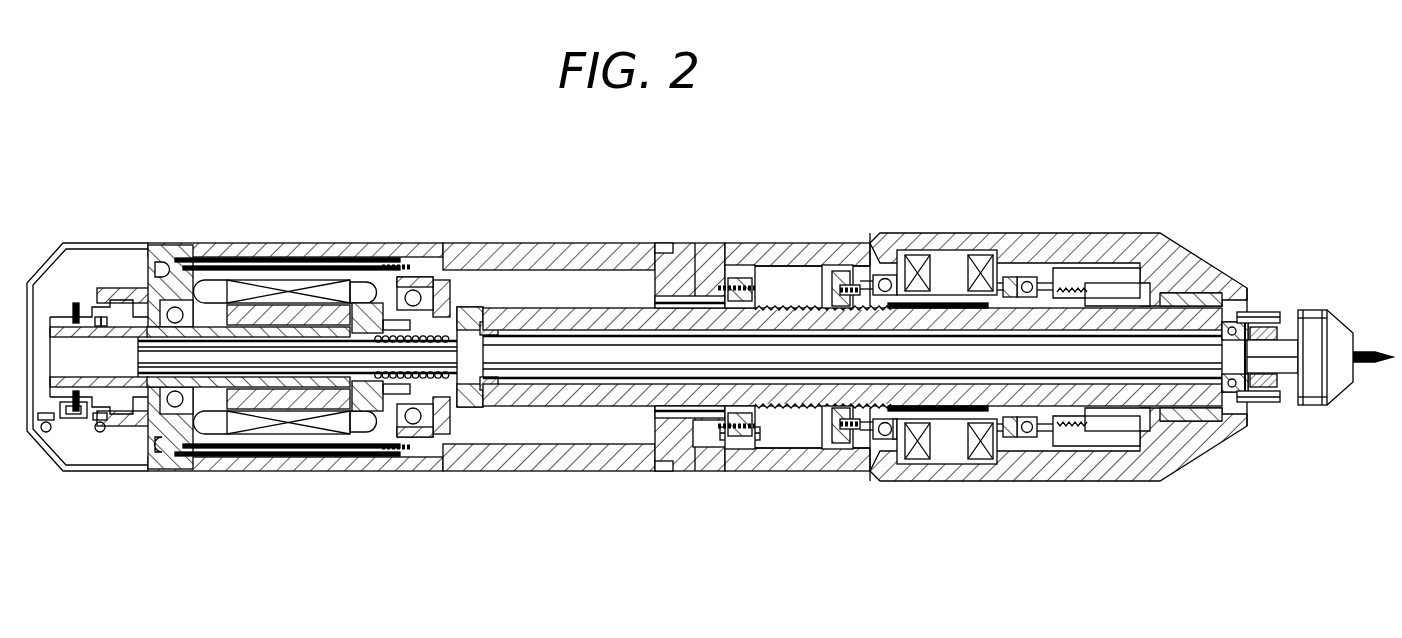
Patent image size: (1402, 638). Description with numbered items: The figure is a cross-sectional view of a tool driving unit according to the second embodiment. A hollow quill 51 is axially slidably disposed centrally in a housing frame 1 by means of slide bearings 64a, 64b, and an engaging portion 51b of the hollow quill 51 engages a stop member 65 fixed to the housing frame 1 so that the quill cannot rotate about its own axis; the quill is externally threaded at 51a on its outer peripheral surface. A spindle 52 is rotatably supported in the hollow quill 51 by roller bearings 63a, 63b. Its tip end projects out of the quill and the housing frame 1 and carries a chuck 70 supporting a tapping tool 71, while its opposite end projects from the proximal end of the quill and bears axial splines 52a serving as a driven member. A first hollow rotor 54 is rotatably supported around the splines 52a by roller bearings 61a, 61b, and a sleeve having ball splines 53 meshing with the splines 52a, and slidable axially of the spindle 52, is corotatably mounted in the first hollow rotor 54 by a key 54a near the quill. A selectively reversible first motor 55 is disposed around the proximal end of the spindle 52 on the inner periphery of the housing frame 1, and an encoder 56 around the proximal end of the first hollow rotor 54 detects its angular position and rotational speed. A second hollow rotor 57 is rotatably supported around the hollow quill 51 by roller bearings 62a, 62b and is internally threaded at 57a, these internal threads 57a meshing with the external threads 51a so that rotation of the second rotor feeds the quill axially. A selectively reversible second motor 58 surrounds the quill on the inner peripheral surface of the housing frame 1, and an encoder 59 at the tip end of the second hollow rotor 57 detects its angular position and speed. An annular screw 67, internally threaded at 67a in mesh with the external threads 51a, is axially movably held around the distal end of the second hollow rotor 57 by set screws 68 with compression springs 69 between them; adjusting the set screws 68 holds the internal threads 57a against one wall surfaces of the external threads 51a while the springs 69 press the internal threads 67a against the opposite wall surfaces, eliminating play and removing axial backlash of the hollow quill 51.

The housing frame 1 is at (796, 236).
The hollow quill 51 is at (557, 305).
The external threads 51a is at (782, 410).
The engaging portion 51b is at (692, 410).
The spindle 52 is at (628, 352).
The axial splines 52a is at (352, 355).
The ball splines 53 is at (378, 388).
The first hollow rotor 54 is at (215, 410).
The key 54a is at (393, 320).
The first motor 55 is at (292, 293).
The encoder 56 is at (78, 293).
The second hollow rotor 57 is at (1012, 283).
The internal threads 57a is at (883, 440).
The second motor 58 is at (952, 255).
The encoder 59 is at (1108, 282).
The roller bearing 61a is at (187, 252).
The roller bearing 61b is at (432, 283).
The roller bearing 62a is at (893, 442).
The roller bearing 62b is at (1035, 275).
The roller bearing 63a is at (493, 398).
The roller bearing 63b is at (1245, 433).
The slide bearing 64a is at (697, 305).
The slide bearing 64b is at (1205, 293).
The stop member 65 is at (742, 280).
The annular screw 67 is at (842, 277).
The internal threads 67a is at (838, 444).
The set screws 68 is at (820, 430).
The compression springs 69 is at (865, 430).
The chuck 70 is at (1320, 312).
The tapping tool 71 is at (1377, 350).